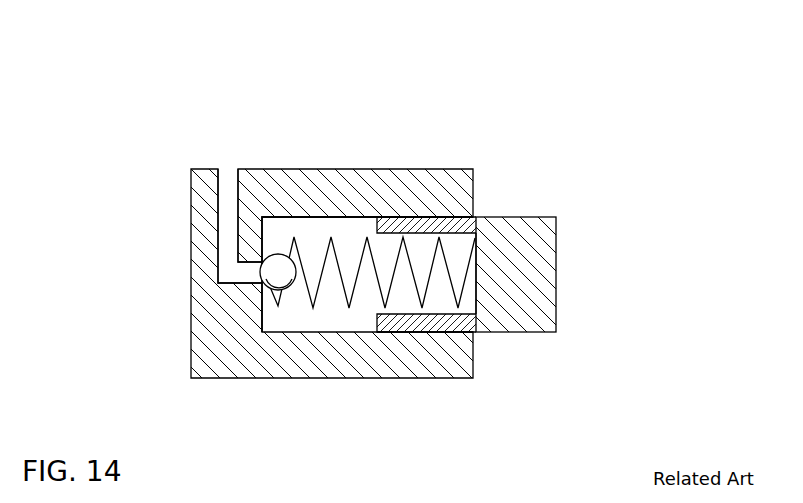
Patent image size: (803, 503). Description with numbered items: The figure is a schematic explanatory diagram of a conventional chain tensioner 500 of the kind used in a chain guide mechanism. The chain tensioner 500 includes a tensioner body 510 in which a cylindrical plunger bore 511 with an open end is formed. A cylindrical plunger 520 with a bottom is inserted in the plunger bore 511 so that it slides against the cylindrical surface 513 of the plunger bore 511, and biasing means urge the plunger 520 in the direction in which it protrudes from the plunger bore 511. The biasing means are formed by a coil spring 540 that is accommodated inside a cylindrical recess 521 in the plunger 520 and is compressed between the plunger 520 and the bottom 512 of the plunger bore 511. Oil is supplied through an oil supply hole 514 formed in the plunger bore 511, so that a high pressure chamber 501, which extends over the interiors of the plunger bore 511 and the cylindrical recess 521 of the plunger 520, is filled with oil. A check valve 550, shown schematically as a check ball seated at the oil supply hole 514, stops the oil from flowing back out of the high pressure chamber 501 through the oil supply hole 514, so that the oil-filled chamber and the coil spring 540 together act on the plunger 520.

The chain tensioner 500 is at (544, 112).
The high pressure chamber 501 is at (331, 296).
The tensioner body 510 is at (288, 355).
The plunger bore 511 is at (371, 121).
The bottom of the plunger bore 512 is at (263, 233).
The cylindrical surface of the plunger bore 513 is at (365, 218).
The oil supply hole 514 is at (223, 156).
The plunger 520 is at (545, 292).
The cylindrical recess 521 is at (432, 242).
The coil spring 540 is at (430, 283).
The check valve 550 is at (259, 273).